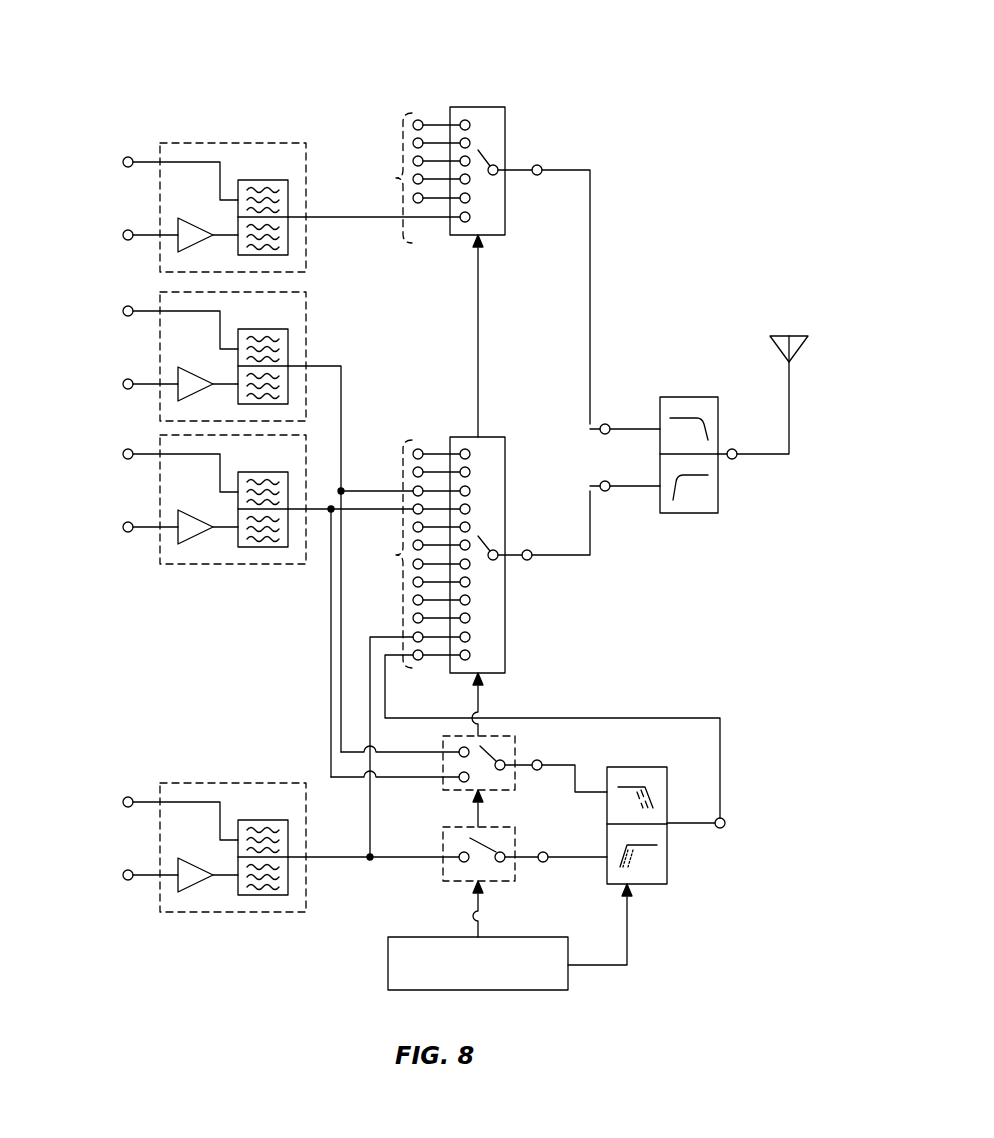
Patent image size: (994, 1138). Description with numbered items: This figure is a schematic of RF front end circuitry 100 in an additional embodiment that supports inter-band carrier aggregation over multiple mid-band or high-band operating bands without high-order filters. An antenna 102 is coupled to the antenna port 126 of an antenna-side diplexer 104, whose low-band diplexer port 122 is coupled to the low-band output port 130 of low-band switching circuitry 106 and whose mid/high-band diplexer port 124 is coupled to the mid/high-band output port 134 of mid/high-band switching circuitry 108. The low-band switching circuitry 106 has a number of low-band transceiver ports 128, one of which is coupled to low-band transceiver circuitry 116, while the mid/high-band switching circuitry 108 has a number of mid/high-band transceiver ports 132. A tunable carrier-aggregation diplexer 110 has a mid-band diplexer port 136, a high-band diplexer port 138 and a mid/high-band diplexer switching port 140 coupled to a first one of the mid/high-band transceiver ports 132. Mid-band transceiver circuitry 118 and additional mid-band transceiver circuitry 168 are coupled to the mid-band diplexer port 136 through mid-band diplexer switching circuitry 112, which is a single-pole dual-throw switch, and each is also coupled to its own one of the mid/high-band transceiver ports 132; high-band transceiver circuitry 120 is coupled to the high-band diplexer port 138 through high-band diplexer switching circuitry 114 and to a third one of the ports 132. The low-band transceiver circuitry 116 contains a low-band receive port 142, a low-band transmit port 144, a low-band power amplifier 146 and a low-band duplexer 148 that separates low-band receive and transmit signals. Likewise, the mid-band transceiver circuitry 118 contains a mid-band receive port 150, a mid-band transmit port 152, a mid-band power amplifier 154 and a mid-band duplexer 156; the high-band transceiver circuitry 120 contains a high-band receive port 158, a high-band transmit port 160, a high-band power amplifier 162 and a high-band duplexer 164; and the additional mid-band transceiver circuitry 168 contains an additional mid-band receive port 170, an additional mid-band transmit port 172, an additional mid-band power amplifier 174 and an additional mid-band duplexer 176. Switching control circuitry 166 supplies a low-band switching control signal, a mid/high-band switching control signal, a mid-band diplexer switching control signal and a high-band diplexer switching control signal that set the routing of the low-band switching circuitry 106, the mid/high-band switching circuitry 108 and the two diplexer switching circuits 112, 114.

The RF front end circuitry 100 is at (602, 45).
The antenna 102 is at (792, 336).
The antenna-side diplexer 104 is at (688, 513).
The low-band switching circuitry 106 is at (484, 107).
The mid/high-band switching circuitry 108 is at (488, 437).
The carrier-aggregation diplexer 110 is at (650, 885).
The mid-band diplexer switching circuitry 112 is at (520, 752).
The high-band diplexer switching circuitry 114 is at (520, 845).
The low-band transceiver circuitry 116 is at (268, 143).
The mid-band transceiver circuitry 118 is at (306, 312).
The high-band transceiver circuitry 120 is at (258, 783).
The low-band diplexer port 122 is at (605, 424).
The mid/high-band diplexer port 124 is at (605, 491).
The antenna port 126 is at (732, 449).
The low-band transceiver ports 128 is at (416, 178).
The low-band output port 130 is at (538, 165).
The mid/high-band transceiver ports 132 is at (416, 554).
The mid/high-band output port 134 is at (528, 550).
The mid-band diplexer port 136 is at (538, 770).
The high-band diplexer port 138 is at (544, 862).
The mid/high-band diplexer switching port 140 is at (720, 828).
The low-band receive port 142 is at (124, 163).
The low-band transmit port 144 is at (124, 236).
The low-band power amplifier 146 is at (200, 222).
The low-band duplexer 148 is at (256, 180).
The mid-band receive port 150 is at (124, 312).
The mid-band transmit port 152 is at (124, 385).
The mid-band power amplifier 154 is at (200, 371).
The mid-band duplexer 156 is at (256, 329).
The high-band receive port 158 is at (124, 803).
The high-band transmit port 160 is at (124, 876).
The high-band power amplifier 162 is at (200, 862).
The high-band duplexer 164 is at (256, 820).
The switching control circuitry 166 is at (510, 937).
The additional mid-band transceiver circuitry 168 is at (258, 564).
The additional mid-band receive port 170 is at (124, 455).
The additional mid-band transmit port 172 is at (124, 528).
The additional mid-band power amplifier 174 is at (200, 514).
The additional mid-band duplexer 176 is at (256, 472).